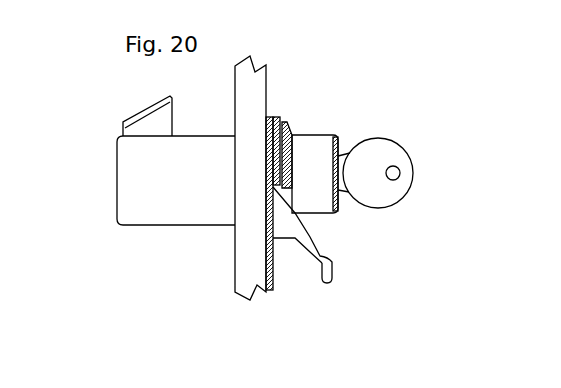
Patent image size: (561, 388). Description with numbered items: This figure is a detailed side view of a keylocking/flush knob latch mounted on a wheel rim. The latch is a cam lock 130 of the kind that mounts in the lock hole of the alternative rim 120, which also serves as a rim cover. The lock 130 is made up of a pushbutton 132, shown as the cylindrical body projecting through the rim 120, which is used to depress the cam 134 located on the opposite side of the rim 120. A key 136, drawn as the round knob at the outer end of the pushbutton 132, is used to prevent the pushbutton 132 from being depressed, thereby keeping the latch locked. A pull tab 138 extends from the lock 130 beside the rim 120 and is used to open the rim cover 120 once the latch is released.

The rim 120 is at (250, 102).
The cam lock 130 is at (373, 243).
The pushbutton 132 is at (310, 147).
The cam 134 is at (155, 125).
The key 136 is at (400, 151).
The pull tab 138 is at (318, 258).